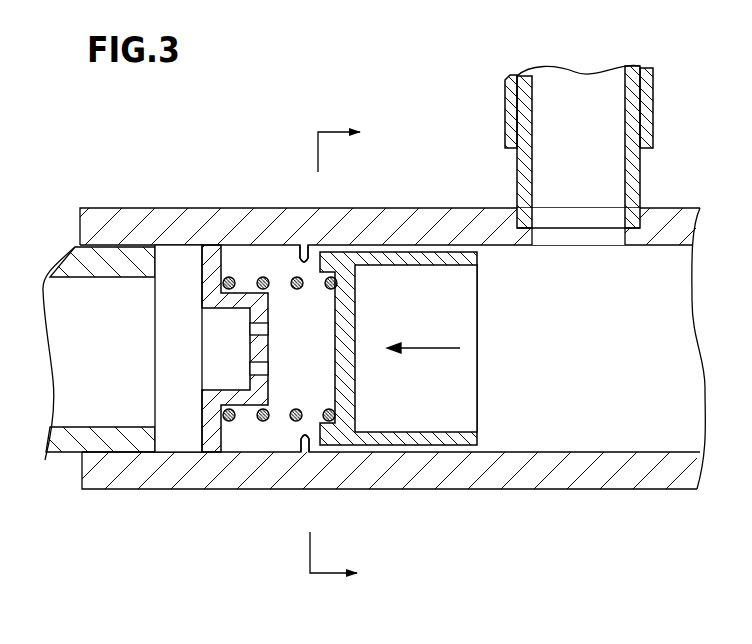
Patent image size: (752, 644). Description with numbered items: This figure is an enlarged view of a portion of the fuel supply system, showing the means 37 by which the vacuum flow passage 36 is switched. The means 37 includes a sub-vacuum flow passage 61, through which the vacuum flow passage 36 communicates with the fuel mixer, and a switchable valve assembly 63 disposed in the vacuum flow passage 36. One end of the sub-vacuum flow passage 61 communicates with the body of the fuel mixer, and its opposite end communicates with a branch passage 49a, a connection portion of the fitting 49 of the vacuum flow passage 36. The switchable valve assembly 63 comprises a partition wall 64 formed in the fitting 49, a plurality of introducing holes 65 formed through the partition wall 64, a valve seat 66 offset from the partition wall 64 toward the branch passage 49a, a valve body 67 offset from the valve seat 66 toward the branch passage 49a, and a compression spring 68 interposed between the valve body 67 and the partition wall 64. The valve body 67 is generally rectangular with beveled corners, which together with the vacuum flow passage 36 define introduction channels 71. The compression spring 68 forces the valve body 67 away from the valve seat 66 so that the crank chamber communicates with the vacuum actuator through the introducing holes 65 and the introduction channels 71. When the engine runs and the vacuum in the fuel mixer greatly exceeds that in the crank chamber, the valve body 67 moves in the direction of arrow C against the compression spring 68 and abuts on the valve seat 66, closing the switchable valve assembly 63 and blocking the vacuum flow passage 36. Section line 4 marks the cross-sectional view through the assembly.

The vacuum flow passage 36 is at (392, 385).
The means 37 is at (517, 278).
The fitting 49 is at (516, 475).
The branch passage 49a is at (642, 183).
The sub-vacuum flow passage 61 is at (503, 114).
The switchable valve assembly 63 is at (415, 243).
The partition wall 64 is at (261, 297).
The introducing holes 65 is at (262, 372).
The valve seat 66 is at (296, 268).
The valve body 67 is at (398, 336).
The compression spring 68 is at (260, 422).
The introduction channels 71 is at (454, 262).
The arrow C is at (418, 350).
The section line 4- 4 is at (335, 354).